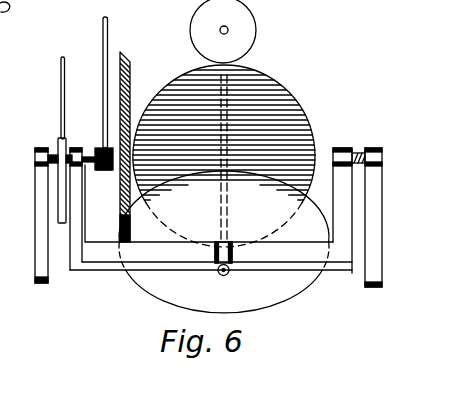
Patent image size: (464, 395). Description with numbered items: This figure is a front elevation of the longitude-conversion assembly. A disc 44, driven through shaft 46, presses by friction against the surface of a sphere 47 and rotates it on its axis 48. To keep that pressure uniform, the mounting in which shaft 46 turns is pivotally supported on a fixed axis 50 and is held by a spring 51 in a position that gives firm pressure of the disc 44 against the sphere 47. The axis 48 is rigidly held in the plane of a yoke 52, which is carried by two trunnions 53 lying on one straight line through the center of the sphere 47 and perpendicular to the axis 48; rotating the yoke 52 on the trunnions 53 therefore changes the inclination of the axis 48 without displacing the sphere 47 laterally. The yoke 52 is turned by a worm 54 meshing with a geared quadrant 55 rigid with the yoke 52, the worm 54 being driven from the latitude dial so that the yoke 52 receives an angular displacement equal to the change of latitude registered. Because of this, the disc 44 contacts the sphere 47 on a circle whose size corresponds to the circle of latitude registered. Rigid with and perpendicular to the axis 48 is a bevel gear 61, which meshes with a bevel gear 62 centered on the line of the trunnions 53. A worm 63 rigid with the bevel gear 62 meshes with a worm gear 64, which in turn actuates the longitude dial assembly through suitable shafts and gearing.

The disc 44 is at (256, 29).
The shaft 46 is at (223, 34).
The sphere 47 is at (296, 100).
The axis 48 is at (229, 203).
The fixed axis 50 is at (12, 13).
The spring 51 is at (33, 91).
The yoke 52 is at (100, 258).
The trunnions 53 is at (47, 154).
The worm 54 is at (57, 146).
The geared quadrant 55 is at (58, 205).
The bevel gear 61 is at (147, 286).
The bevel gear 62 is at (122, 55).
The worm 63 is at (101, 146).
The worm gear 64 is at (98, 166).